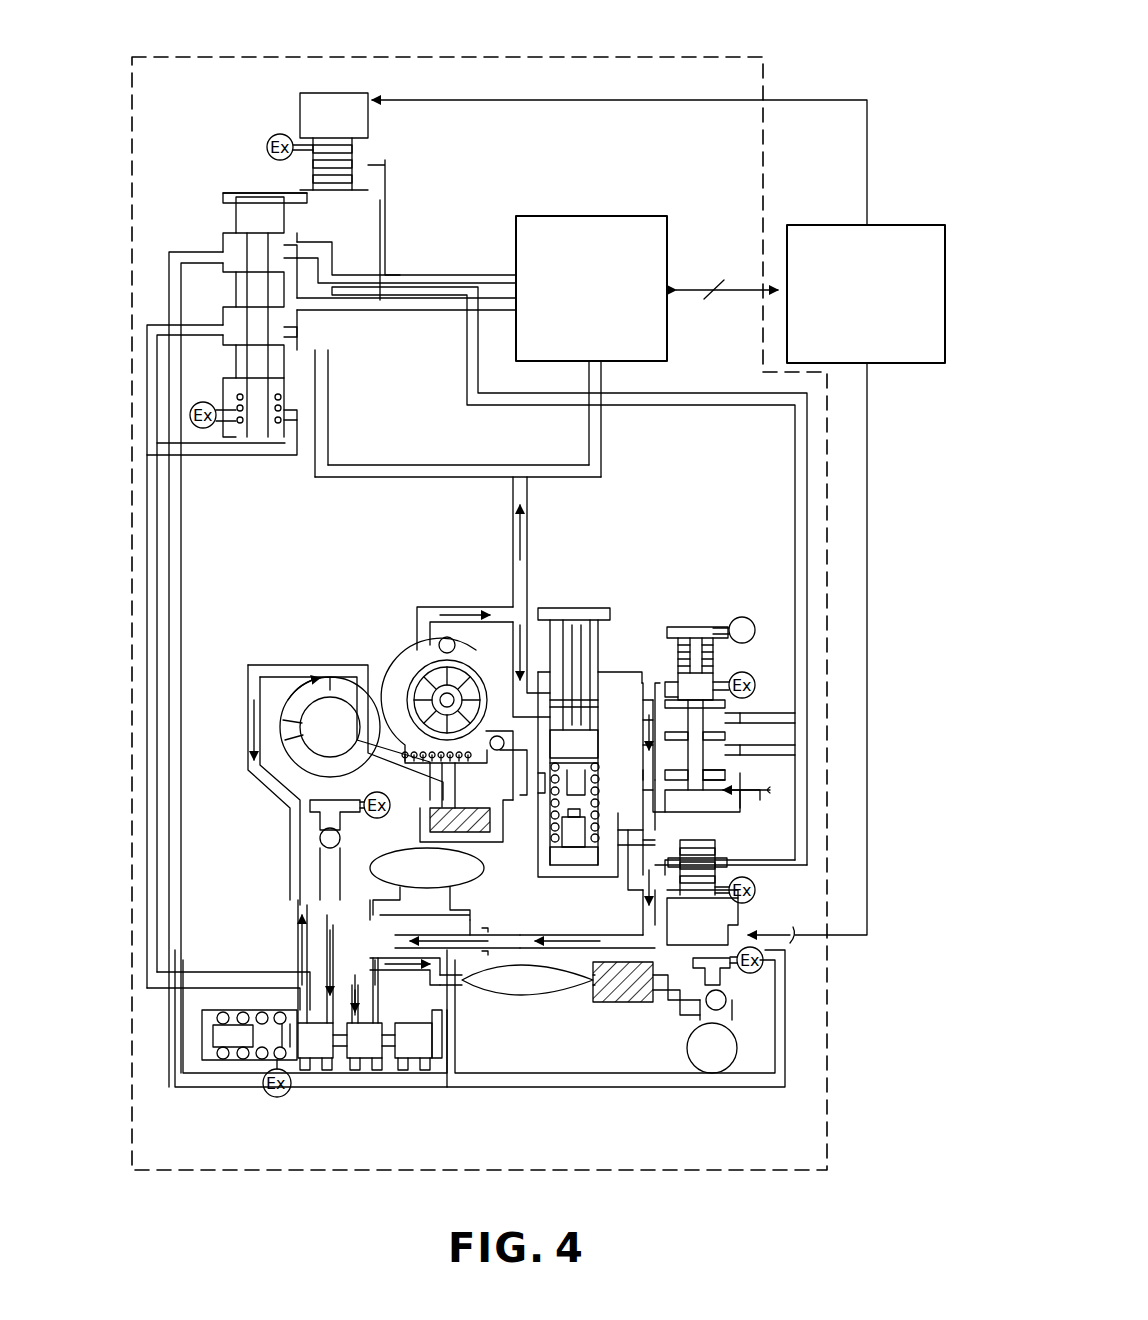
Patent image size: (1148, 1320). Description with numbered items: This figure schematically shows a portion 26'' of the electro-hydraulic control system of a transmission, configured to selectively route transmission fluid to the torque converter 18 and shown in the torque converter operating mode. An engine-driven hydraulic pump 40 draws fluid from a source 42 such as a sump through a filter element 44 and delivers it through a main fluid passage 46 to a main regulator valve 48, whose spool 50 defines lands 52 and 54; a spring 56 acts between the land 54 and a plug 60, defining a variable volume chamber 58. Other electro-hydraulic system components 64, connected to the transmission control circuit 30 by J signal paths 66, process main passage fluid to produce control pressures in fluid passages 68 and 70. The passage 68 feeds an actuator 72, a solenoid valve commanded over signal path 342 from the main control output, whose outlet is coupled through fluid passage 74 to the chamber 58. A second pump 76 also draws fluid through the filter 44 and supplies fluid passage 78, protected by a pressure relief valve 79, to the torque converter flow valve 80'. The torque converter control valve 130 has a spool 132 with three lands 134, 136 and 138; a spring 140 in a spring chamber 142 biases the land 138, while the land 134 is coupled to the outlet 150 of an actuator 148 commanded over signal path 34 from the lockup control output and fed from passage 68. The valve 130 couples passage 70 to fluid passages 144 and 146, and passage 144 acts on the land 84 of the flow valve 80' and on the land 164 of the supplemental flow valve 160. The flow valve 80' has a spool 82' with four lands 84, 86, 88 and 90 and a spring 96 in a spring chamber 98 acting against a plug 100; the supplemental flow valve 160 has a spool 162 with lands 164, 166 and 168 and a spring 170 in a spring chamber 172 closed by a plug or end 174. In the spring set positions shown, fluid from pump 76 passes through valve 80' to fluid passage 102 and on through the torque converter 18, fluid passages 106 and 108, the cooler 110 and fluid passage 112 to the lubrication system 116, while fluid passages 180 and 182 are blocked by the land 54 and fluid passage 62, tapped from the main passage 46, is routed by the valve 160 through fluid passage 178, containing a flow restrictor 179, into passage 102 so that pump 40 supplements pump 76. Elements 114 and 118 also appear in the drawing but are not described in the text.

The portion of the electro-hydraulic control system 26'' is at (479, 585).
The transmission control circuit 30 is at (895, 225).
The signal path 34 is at (850, 100).
The signal path 342 is at (870, 452).
The other electro-hydraulic system components 64 is at (620, 216).
The signal paths 66 is at (730, 291).
The fluid passage 68 is at (445, 275).
The fluid passage 70 is at (430, 313).
The torque converter control valve 130 is at (208, 175).
The spool 132 is at (250, 188).
The land 134 is at (260, 215).
The land 136 is at (260, 289).
The land 138 is at (260, 361).
The spring 140 is at (282, 425).
The spring chamber 142 is at (282, 385).
The fluid passage 144 is at (183, 252).
The fluid passage 146 is at (170, 496).
The actuator 148 is at (300, 105).
The outlet 150 is at (325, 192).
The supplemental flow valve 160 is at (705, 583).
The spool 162 is at (775, 789).
The land 164 is at (718, 782).
The land 166 is at (735, 760).
The land 168 is at (700, 690).
The spring 170 is at (745, 650).
The spring chamber 172 is at (692, 632).
The plug or end 174 is at (712, 628).
The fluid passage 178 is at (625, 936).
The flow restrictor 179 is at (496, 935).
The fluid passage 180 is at (652, 705).
The fluid passage 182 is at (742, 740).
The torque converter 18 is at (427, 884).
The hydraulic pump 40 is at (406, 665).
The source of transmission fluid 42 is at (510, 800).
The filter element 44 is at (465, 808).
The main fluid passage 46 is at (465, 607).
The main regulator valve 48 is at (588, 582).
The spool 50 is at (562, 632).
The land 52 is at (604, 640).
The land 54 is at (574, 744).
The spring 56 is at (595, 780).
The variable volume chamber 58 is at (582, 822).
The plug 60 is at (570, 865).
The fluid passage 62 is at (612, 678).
The actuator 72 is at (735, 915).
The fluid passage 74 is at (720, 840).
The hydraulic pump 76 is at (332, 690).
The fluid passage 78 is at (270, 665).
The pressure relief valve 79 is at (342, 832).
The torque converter flow valve 80' is at (297, 1058).
The spool 82' is at (447, 1009).
The land 84 is at (438, 1063).
The land 86 is at (385, 1063).
The land 88 is at (338, 1063).
The land 90 is at (300, 1010).
The spring 96 is at (245, 1062).
The spring chamber 98 is at (265, 1025).
The plug 100 is at (205, 1062).
The fluid passage 102 is at (290, 905).
The fluid passage 106 is at (470, 915).
The fluid passage 108 is at (440, 990).
The cooler 110 is at (517, 980).
The fluid passage 112 is at (665, 1012).
The orifice 114 is at (600, 1005).
The lubrication system 116 is at (688, 1060).
The check valve 118 is at (735, 990).